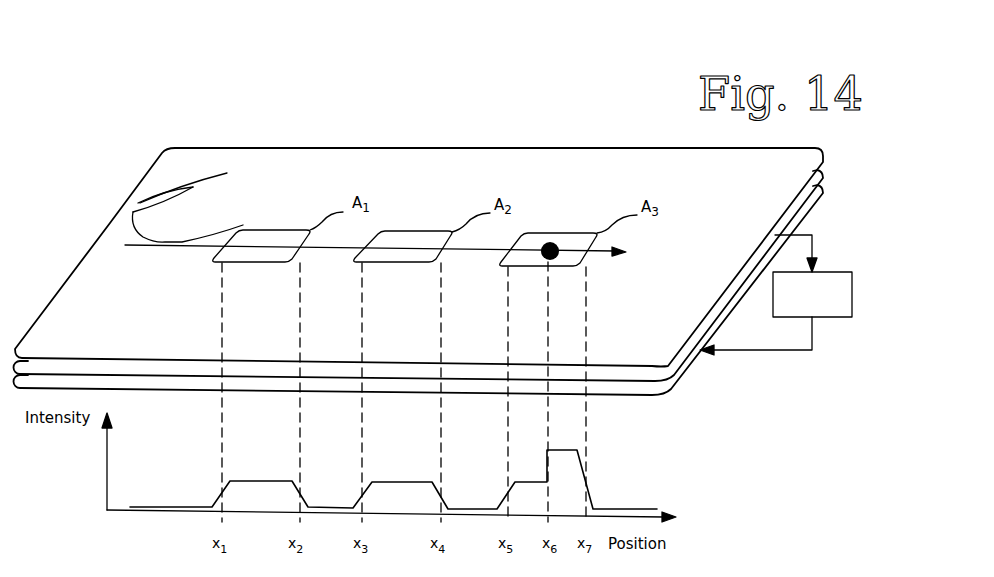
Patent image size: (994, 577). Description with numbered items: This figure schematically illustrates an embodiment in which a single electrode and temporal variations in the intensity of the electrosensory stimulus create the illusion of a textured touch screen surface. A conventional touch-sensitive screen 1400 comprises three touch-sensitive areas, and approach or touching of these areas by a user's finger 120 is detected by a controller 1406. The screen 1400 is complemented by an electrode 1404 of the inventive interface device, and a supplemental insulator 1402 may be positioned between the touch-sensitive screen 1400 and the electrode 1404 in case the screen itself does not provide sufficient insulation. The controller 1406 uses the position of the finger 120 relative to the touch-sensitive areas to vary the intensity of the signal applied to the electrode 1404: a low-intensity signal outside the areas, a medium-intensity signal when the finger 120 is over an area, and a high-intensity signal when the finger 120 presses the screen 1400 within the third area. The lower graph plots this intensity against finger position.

The touch-sensitive screen 1400 is at (162, 158).
The finger 120 is at (153, 192).
The supplemental insulator 1402 is at (670, 377).
The electrode 1404 is at (652, 396).
The controller 1406 is at (833, 318).